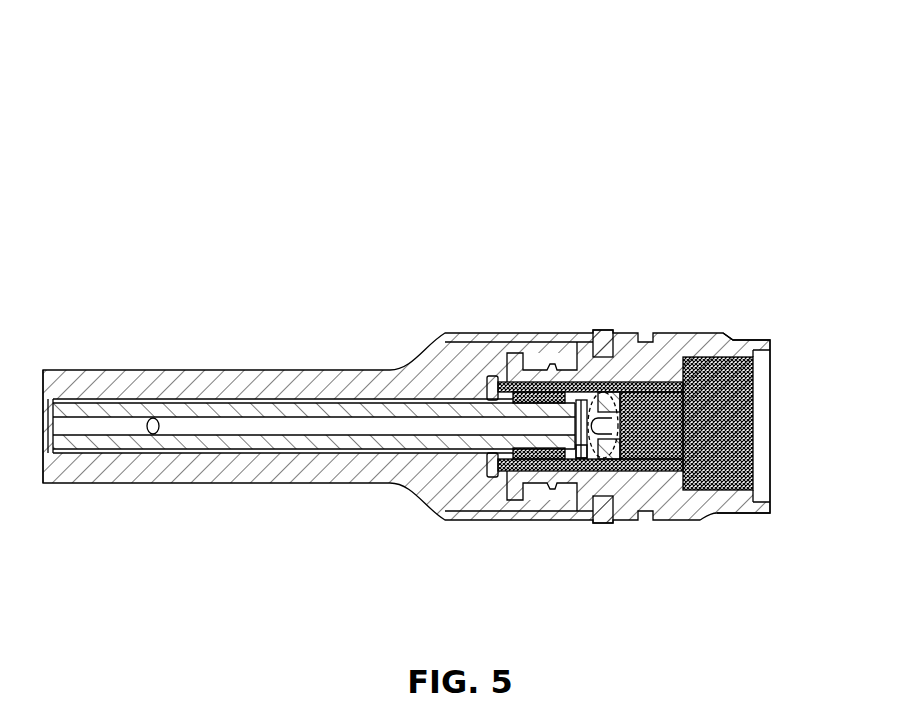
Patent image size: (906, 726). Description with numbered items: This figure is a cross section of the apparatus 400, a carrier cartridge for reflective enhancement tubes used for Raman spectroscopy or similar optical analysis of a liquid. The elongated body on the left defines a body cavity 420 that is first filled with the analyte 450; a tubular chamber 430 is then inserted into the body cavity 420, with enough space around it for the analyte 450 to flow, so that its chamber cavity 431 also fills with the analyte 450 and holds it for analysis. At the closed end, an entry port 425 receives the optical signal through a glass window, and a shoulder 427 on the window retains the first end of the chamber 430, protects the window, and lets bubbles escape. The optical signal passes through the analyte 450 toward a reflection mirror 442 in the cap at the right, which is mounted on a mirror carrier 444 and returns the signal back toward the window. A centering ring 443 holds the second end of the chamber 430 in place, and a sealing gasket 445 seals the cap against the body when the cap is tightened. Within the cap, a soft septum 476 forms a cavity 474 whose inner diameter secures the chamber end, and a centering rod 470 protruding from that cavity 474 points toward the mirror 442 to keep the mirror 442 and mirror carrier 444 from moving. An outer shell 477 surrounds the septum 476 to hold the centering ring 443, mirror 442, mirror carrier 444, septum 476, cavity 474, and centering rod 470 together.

The apparatus 400 is at (698, 116).
The body cavity 420 is at (303, 397).
The entry port 425 is at (45, 381).
The shoulder 427 is at (50, 393).
The chamber 430 is at (92, 408).
The chamber cavity 431 is at (162, 420).
The reflection mirror 442 is at (580, 405).
The centering ring 443 is at (517, 447).
The mirror carrier 444 is at (638, 362).
The sealing gasket 445 is at (605, 348).
The analyte 450 is at (397, 427).
The centering rod 470 is at (613, 432).
The cavity 474 is at (585, 455).
The septum 476 is at (687, 427).
The outer shell 477 is at (690, 348).